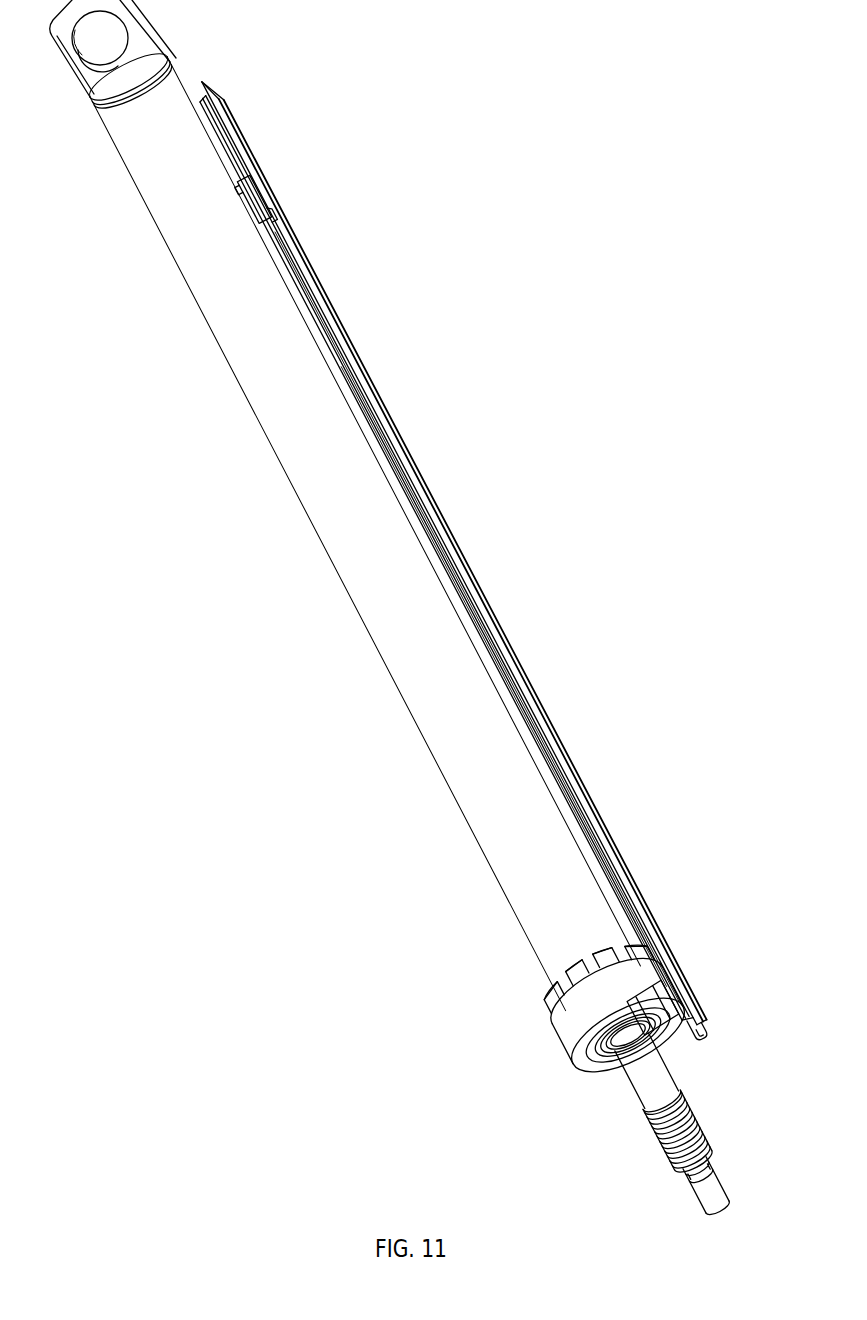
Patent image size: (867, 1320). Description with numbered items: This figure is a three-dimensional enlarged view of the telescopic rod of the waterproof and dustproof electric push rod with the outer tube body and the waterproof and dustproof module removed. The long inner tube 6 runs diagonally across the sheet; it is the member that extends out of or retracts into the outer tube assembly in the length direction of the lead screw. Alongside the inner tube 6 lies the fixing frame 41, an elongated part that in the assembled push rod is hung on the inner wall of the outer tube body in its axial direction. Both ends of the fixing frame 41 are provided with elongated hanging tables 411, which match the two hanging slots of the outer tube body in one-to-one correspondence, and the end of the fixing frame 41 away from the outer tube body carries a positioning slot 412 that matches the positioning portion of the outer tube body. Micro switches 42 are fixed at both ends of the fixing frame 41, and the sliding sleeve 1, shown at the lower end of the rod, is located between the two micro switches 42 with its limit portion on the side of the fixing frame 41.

The sliding sleeve 1 is at (568, 1040).
The inner tube 6 is at (395, 635).
The fixing frame 41 is at (545, 723).
The hanging table 411 is at (665, 950).
The positioning slot 412 is at (697, 1033).
The micro switch 42 is at (255, 200).